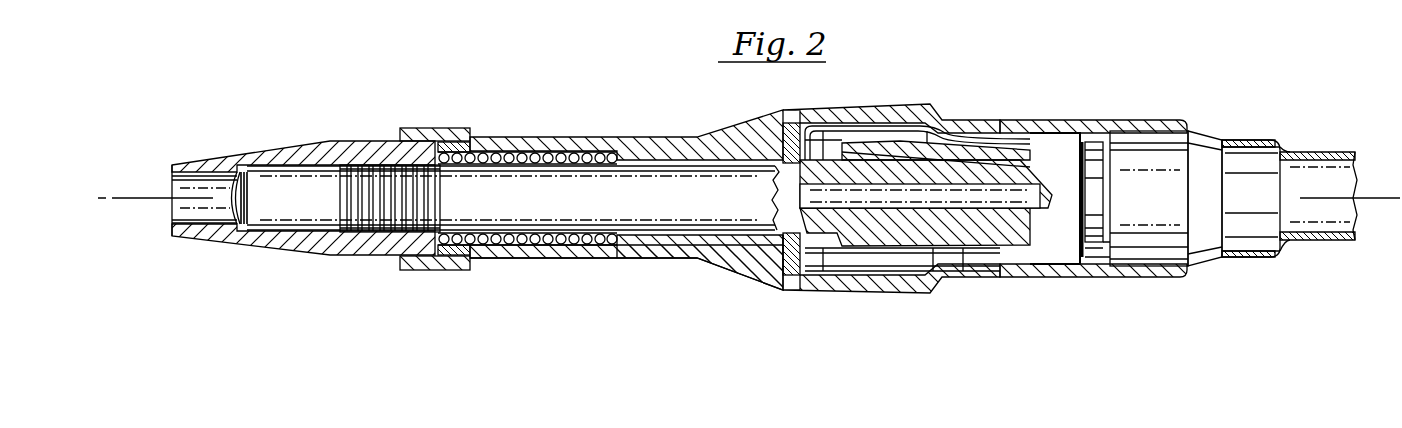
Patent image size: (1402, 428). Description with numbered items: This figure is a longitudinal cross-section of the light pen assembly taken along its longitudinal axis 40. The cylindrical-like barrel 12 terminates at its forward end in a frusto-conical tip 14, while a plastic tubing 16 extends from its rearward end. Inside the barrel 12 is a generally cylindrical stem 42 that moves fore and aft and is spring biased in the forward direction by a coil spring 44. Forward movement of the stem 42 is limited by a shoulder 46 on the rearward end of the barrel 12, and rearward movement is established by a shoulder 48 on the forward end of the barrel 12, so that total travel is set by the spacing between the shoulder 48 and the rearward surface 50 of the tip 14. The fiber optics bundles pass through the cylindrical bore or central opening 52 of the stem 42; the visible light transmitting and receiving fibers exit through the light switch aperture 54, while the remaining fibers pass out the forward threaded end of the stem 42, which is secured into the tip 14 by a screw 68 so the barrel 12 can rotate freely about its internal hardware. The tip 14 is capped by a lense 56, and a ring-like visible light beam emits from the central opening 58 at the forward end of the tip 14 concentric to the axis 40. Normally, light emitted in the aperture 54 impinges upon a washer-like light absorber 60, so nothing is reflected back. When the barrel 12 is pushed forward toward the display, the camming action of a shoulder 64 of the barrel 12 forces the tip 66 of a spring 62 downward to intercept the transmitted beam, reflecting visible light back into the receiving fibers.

The barrel 12 is at (1160, 120).
The frusto-conical tip 14 is at (240, 154).
The plastic tubing 16 is at (1318, 152).
The longitudinal axis 40 is at (153, 197).
The stem 42 is at (680, 160).
The coil spring 44 is at (565, 247).
The shoulder 46 is at (1108, 265).
The shoulder 48 is at (462, 257).
The rearward surface 50 is at (402, 270).
The central opening 52 is at (920, 247).
The light switch aperture 54 is at (875, 143).
The lense 56 is at (233, 218).
The central opening 58 is at (192, 220).
The light absorber 60 is at (820, 272).
The spring 62 is at (1095, 143).
The shoulder 64 is at (936, 105).
The tip 66 is at (820, 115).
The screw 68 is at (372, 150).